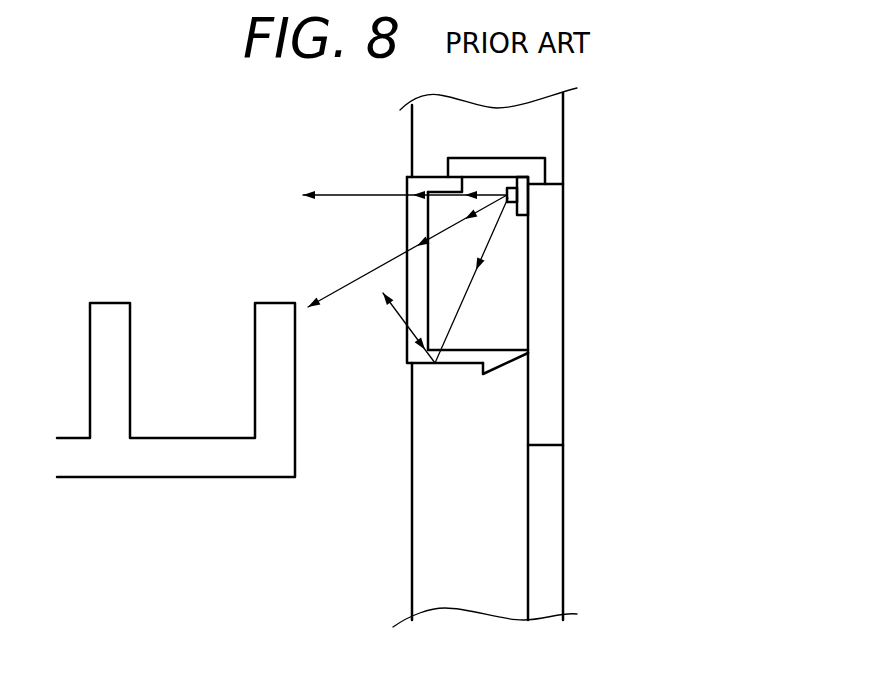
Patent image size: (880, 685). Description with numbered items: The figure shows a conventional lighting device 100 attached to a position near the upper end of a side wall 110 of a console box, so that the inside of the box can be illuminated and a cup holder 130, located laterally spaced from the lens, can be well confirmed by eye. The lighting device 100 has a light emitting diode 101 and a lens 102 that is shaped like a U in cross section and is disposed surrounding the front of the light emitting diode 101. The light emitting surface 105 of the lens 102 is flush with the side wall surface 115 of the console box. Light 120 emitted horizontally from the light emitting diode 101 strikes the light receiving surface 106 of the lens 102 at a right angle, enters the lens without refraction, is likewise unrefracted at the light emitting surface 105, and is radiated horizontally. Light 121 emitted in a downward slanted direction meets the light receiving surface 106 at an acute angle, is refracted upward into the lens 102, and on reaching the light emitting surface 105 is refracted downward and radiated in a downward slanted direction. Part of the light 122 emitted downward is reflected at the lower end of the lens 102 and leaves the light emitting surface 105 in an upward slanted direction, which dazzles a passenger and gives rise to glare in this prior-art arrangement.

The lighting device 100 is at (346, 165).
The light emitting diode 101 is at (510, 203).
The lens 102 is at (457, 364).
The light emitting surface 105 is at (408, 213).
The light receiving surface 106 is at (450, 276).
The side wall 110 is at (547, 133).
The side wall surface 115 is at (412, 463).
The light 120 is at (443, 196).
The light 121 is at (408, 241).
The light 122 is at (460, 305).
The cup holder 130 is at (297, 397).